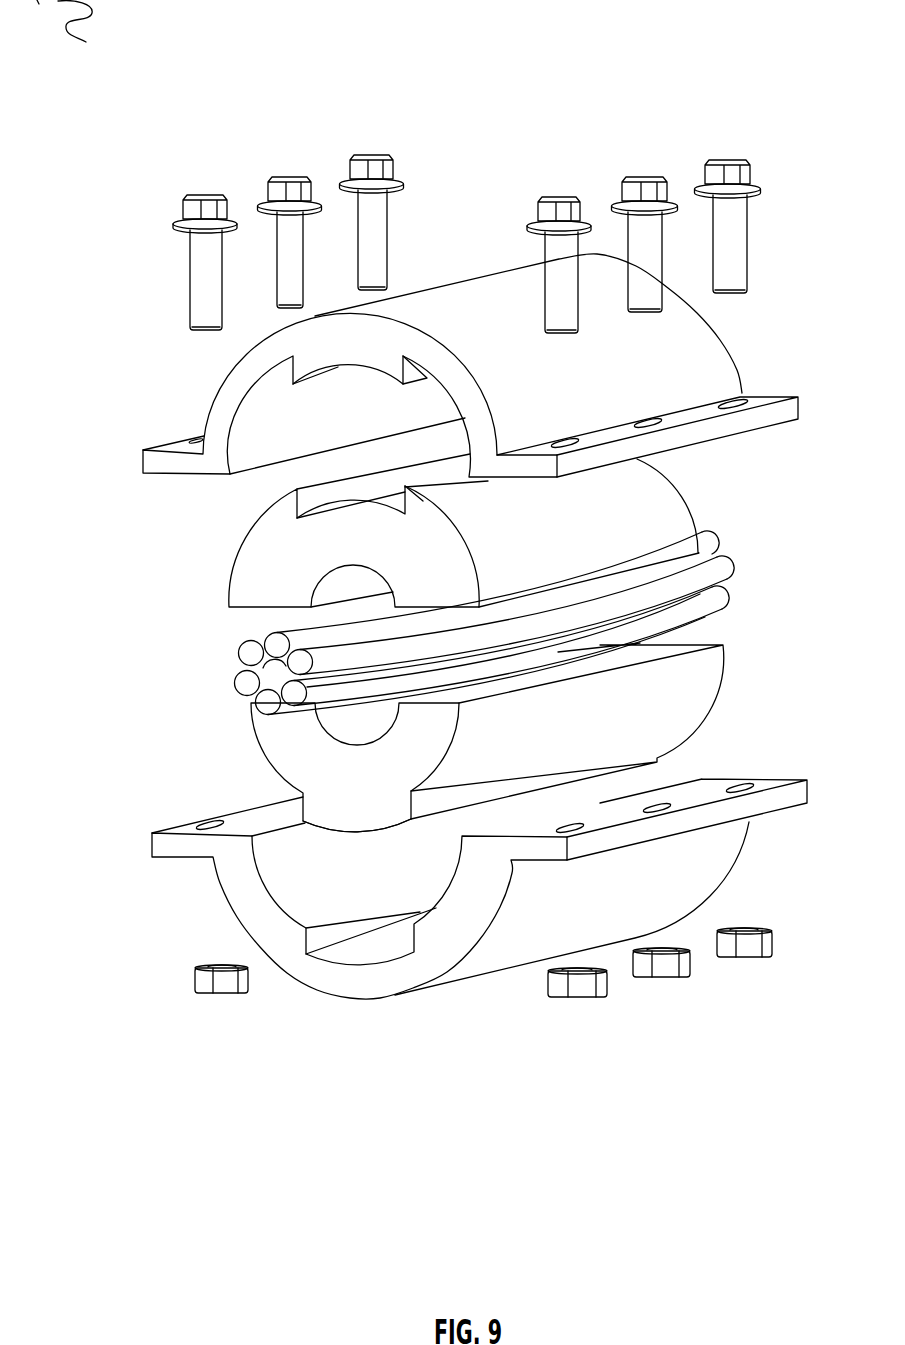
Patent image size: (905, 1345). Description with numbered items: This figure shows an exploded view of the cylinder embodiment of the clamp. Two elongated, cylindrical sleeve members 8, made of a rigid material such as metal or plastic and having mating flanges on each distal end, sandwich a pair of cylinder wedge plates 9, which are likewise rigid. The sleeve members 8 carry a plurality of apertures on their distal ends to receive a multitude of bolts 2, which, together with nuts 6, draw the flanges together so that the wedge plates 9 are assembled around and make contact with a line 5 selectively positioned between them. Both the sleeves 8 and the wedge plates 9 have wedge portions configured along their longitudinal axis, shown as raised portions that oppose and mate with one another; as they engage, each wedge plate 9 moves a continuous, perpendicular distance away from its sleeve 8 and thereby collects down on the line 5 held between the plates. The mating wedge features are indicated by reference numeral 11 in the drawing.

The bolts 2 is at (190, 277).
The line 5 is at (238, 654).
The nuts 6 is at (195, 978).
The cylinder sleeve members 8 is at (223, 383).
The cylinder wedge plates 9 is at (235, 560).
The rib / groove 11 is at (405, 1052).